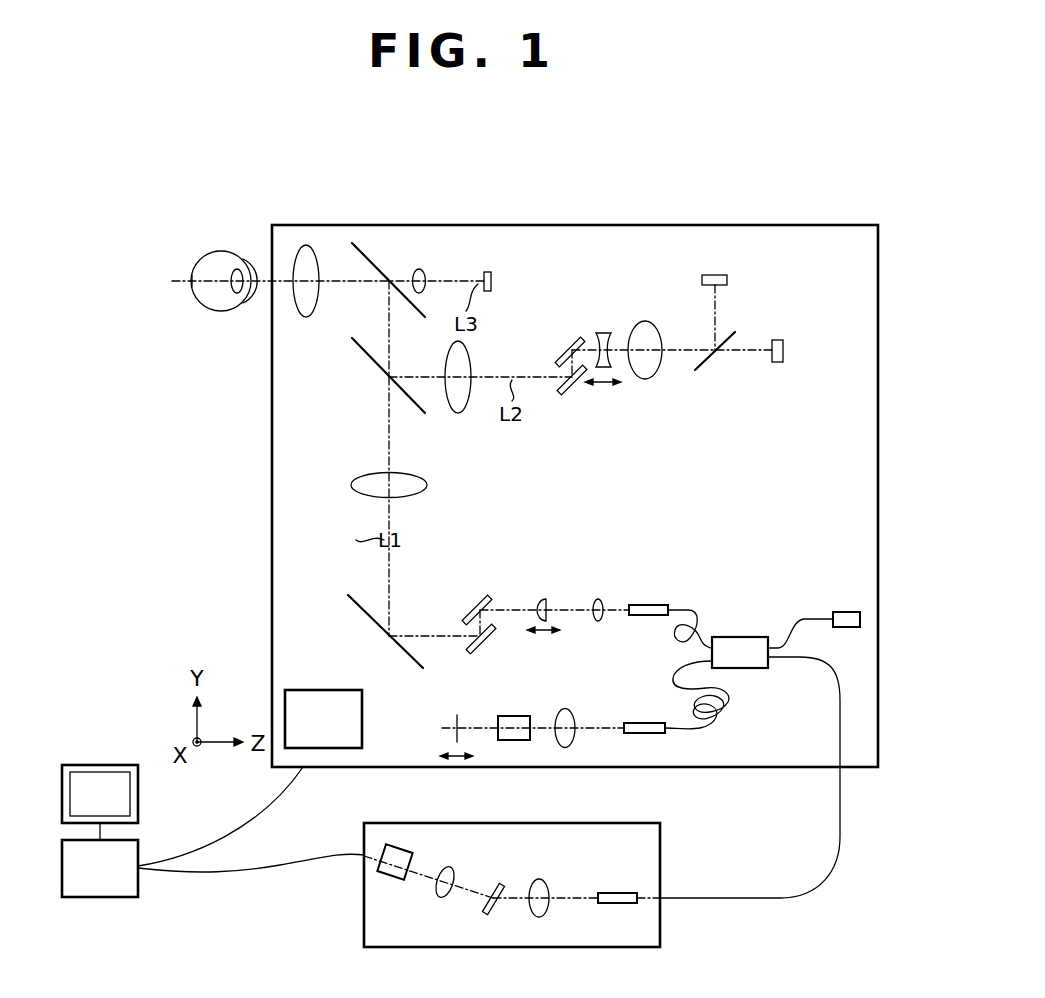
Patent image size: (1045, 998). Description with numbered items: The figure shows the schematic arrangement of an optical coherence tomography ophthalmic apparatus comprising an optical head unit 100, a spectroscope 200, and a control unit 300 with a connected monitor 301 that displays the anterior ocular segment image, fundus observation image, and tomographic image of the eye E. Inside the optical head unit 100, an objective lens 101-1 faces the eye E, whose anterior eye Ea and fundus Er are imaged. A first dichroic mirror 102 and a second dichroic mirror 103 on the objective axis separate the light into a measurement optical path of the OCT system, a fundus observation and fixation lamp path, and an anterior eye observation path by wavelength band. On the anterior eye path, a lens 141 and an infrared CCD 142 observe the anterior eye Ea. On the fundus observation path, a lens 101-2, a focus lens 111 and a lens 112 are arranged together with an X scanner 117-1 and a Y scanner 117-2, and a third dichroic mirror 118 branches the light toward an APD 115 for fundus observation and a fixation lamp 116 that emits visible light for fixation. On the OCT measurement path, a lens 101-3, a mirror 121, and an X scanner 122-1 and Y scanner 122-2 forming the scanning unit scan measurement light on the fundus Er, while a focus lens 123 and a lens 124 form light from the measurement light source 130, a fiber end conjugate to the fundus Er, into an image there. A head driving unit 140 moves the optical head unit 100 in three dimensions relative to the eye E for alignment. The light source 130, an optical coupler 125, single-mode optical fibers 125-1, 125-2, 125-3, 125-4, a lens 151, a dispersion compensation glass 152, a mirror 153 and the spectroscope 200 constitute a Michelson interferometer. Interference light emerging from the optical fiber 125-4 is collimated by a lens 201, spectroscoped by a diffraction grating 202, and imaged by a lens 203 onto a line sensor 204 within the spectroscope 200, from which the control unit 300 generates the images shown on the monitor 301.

The optical head unit 100 is at (647, 225).
The eye to be examined E is at (226, 251).
The fundus Er is at (205, 300).
The anterior eye Ea is at (244, 296).
The objective lens 101-1 is at (306, 245).
The first dichroic mirror 102 is at (388, 262).
The second dichroic mirror 103 is at (368, 352).
The lens 101-2 is at (458, 416).
The lens 101-3 is at (358, 478).
The lens 141 is at (420, 268).
The infrared CCD 142 is at (486, 272).
The focus lens 111 is at (603, 331).
The lens 112 is at (645, 321).
The APD 115 is at (778, 363).
The fixation lamp 116 is at (718, 275).
The X scanner 117-1 is at (574, 388).
The Y scanner 117-2 is at (566, 346).
The third dichroic mirror 118 is at (710, 366).
The mirror 121 is at (346, 594).
The X scanner 122-1 is at (496, 642).
The Y scanner 122-2 is at (476, 603).
The focus lens 123 is at (543, 598).
The lens 124 is at (598, 599).
The optical coupler 125 is at (740, 637).
The optical fiber 125-1 is at (794, 624).
The optical fiber 125-2 is at (688, 612).
The optical fiber 125-3 is at (670, 666).
The optical fiber 125-4 is at (840, 706).
The measurement light source 130 is at (846, 612).
The head driving unit 140 is at (326, 690).
The lens 151 is at (577, 712).
The dispersion compensation glass 152 is at (512, 716).
The mirror 153 is at (457, 714).
The spectroscope 200 is at (637, 823).
The lens 201 is at (541, 879).
The diffraction grating 202 is at (494, 884).
The lens 203 is at (452, 866).
The line sensor 204 is at (398, 846).
The control unit 300 is at (100, 897).
The monitor 301 is at (100, 765).